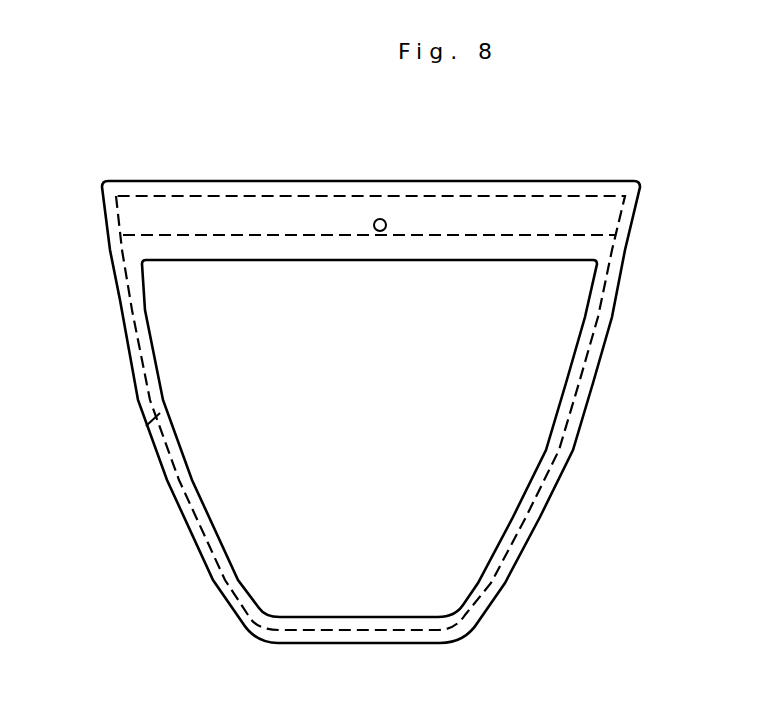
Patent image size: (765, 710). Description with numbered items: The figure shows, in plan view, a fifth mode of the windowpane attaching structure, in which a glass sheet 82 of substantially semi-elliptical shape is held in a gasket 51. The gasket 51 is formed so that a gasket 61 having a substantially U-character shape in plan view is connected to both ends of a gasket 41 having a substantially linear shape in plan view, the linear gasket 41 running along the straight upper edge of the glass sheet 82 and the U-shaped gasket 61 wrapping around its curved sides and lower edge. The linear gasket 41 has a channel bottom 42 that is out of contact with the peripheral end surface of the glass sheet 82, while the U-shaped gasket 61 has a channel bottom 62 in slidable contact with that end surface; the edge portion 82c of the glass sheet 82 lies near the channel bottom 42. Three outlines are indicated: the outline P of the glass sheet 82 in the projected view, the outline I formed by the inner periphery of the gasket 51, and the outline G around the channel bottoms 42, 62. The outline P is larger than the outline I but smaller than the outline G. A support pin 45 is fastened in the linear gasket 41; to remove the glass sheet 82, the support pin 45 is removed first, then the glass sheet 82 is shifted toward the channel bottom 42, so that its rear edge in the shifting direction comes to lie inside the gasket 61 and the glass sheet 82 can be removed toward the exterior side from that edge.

The gasket 41 is at (155, 170).
The channel bottom 42 is at (482, 196).
The support pin 45 is at (385, 214).
The gasket 51 is at (98, 93).
The gasket 61 is at (104, 289).
The channel bottom 62 is at (146, 424).
The glass sheet 82 is at (388, 403).
The edge portion of panel 82c is at (307, 233).
The outline around the surface in the channel G is at (568, 182).
The outline of the windowpane in the projected view P is at (588, 228).
The outline formed by the inner periphery of the gasket I is at (602, 289).